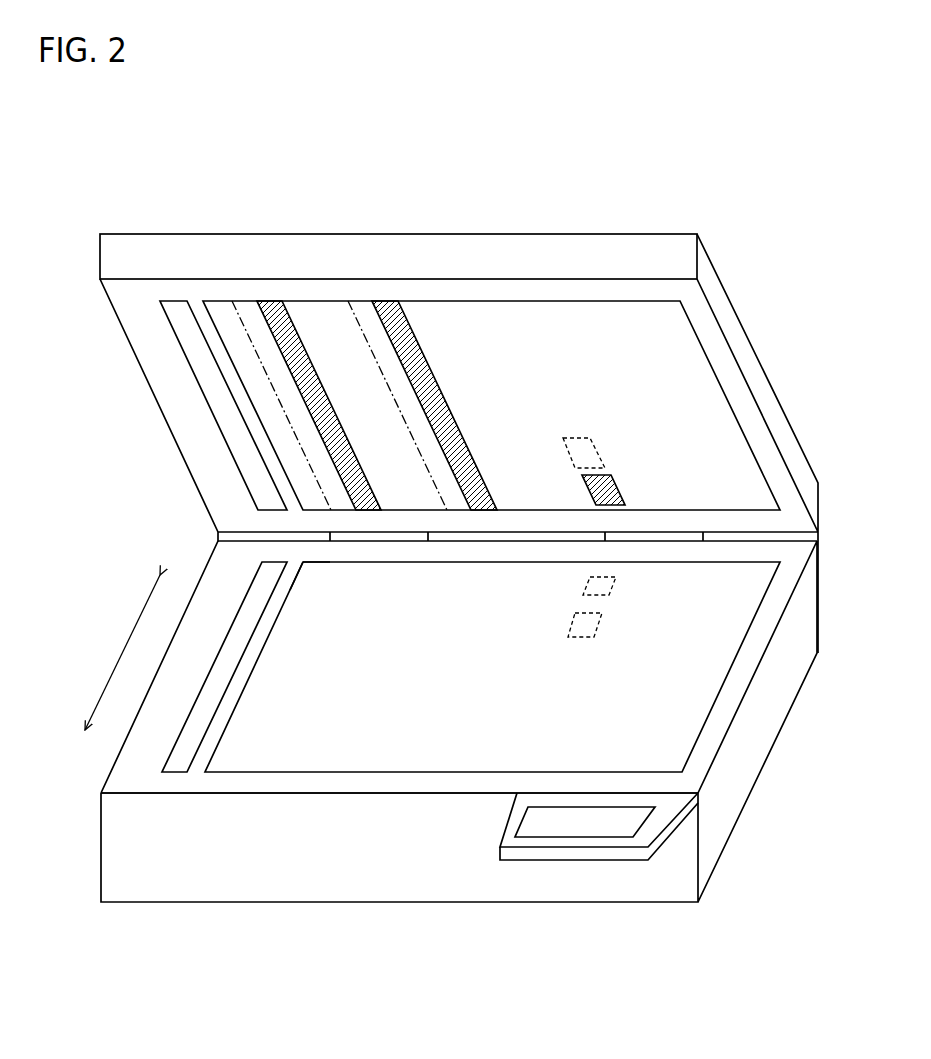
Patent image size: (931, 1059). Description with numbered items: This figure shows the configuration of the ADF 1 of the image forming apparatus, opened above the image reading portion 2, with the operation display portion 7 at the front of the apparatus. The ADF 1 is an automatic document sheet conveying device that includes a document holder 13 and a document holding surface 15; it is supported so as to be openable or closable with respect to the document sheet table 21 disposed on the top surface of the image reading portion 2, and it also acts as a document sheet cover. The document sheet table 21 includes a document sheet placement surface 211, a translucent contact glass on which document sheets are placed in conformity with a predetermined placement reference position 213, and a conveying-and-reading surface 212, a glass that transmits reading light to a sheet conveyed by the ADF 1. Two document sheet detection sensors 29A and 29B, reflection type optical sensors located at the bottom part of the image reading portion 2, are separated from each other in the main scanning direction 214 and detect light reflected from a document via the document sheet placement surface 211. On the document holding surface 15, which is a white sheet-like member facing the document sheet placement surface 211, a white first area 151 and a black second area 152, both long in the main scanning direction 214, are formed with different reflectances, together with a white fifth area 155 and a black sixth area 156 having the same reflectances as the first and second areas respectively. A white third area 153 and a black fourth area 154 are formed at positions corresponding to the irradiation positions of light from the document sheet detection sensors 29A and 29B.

The ADF 1 is at (153, 426).
The image reading portion 2 is at (769, 787).
The operation display portion 7 is at (517, 820).
The document holder 13 is at (172, 300).
The document holding surface 15 is at (485, 300).
The document sheet table 21 is at (315, 794).
The document sheet detection sensor 29A is at (606, 630).
The document sheet detection sensor 29B is at (622, 592).
The first area 151 is at (266, 348).
The second area 152 is at (308, 388).
The third area 153 is at (584, 454).
The fourth area 154 is at (601, 491).
The fifth area 155 is at (398, 384).
The sixth area 156 is at (439, 421).
The document sheet placement surface 211 is at (250, 773).
The conveying-and-reading surface 212 is at (172, 773).
The placement reference position 213 is at (308, 567).
The main scanning direction 214 is at (128, 640).